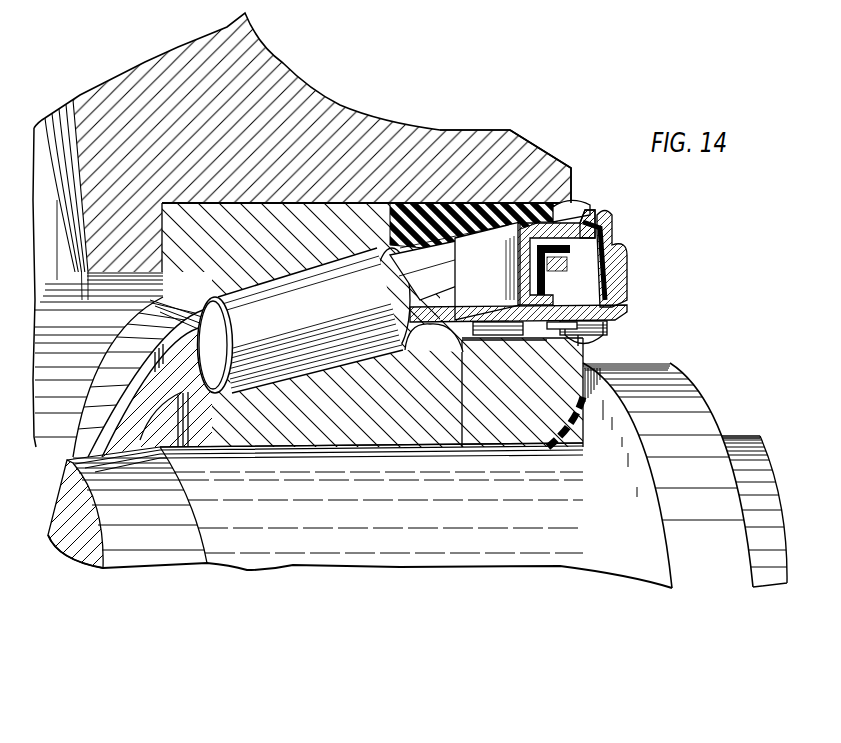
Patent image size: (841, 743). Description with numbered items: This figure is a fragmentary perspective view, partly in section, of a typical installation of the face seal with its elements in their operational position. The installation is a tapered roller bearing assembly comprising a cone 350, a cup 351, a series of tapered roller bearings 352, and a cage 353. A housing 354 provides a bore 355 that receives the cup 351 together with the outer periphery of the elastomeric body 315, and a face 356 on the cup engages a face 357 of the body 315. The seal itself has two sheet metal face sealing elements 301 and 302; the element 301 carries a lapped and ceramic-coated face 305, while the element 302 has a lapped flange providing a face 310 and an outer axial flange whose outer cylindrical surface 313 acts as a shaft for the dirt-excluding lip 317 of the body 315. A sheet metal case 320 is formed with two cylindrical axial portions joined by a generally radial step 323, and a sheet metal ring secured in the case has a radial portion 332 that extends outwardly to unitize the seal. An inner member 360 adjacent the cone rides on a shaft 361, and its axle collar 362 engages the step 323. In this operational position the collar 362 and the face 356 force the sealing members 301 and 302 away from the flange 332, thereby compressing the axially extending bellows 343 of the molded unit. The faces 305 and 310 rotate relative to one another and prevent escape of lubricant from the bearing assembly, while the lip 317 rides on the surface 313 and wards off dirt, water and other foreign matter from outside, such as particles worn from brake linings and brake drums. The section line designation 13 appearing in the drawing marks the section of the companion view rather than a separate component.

The cup 351 is at (313, 210).
The housing 354 is at (450, 142).
The elastomeric body 315 is at (533, 150).
The face of the body 357 is at (375, 212).
The face on the cup 356 is at (415, 200).
The bore 355 is at (575, 197).
The lip 317 is at (563, 213).
The outer cylindrical surface 313 is at (580, 225).
The bellows portion 343 is at (605, 235).
The face sealing element 302 is at (583, 283).
The sheet metal case 320 is at (628, 312).
The axle collar 362 is at (612, 330).
The radial step 323 is at (590, 343).
The inner member 360 is at (575, 364).
The lapped and ceramic-coated face 305 is at (492, 300).
The face 310 is at (513, 300).
The pin 13 is at (545, 300).
The face sealing element 301 is at (455, 271).
The radial portion 332 is at (434, 338).
The tapered roller bearings 352 is at (304, 320).
The cage 353 is at (150, 372).
The cone 350 is at (338, 445).
The shaft 361 is at (417, 475).